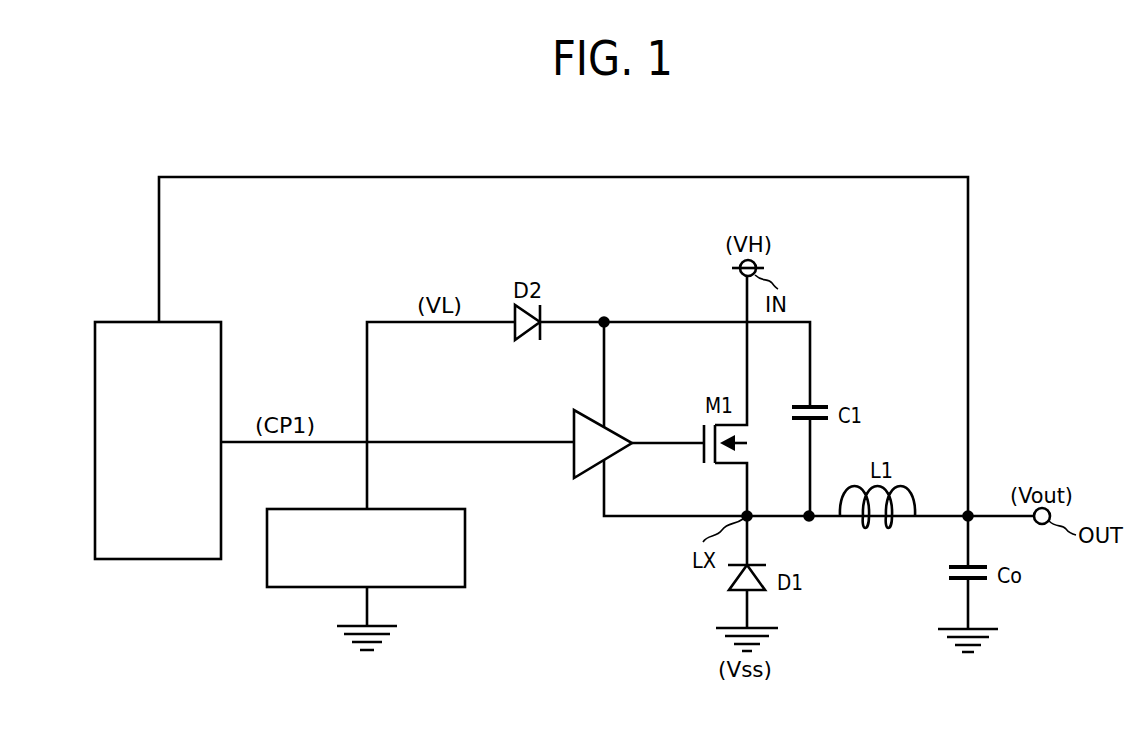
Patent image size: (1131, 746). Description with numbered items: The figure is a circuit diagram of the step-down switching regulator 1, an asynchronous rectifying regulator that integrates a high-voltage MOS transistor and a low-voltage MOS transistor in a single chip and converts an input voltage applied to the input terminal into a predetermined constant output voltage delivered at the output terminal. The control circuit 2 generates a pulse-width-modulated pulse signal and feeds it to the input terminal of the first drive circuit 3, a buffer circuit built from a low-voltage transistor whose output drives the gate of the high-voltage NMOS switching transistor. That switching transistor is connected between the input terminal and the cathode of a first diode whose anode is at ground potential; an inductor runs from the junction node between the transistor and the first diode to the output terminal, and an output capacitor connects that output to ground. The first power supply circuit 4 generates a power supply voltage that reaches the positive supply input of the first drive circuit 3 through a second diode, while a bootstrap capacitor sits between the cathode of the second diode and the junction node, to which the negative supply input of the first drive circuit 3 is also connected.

The step-down switching regulator 1 is at (1037, 168).
The control circuit 2 is at (182, 560).
The first drive circuit 3 is at (618, 435).
The first power supply circuit 4 is at (465, 534).